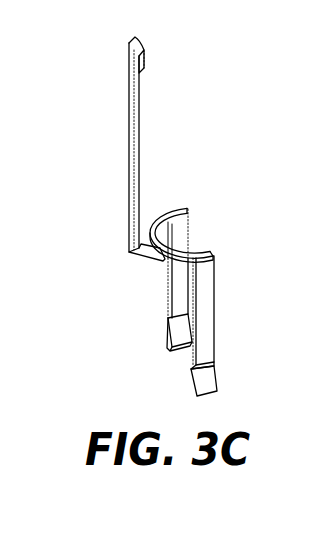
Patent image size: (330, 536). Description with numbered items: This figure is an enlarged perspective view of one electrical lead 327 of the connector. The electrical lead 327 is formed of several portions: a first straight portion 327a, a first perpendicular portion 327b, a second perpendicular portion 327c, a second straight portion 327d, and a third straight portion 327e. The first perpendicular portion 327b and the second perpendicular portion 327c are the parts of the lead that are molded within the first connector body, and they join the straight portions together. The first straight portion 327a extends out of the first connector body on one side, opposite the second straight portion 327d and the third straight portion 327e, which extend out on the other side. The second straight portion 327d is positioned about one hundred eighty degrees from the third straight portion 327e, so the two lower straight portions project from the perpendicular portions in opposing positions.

The electrical lead 327 is at (165, 216).
The first straight portion 327a is at (129, 177).
The first perpendicular portion 327b is at (163, 217).
The second perpendicular portion 327c is at (165, 260).
The second straight portion 327d is at (168, 308).
The third straight portion 327e is at (214, 327).